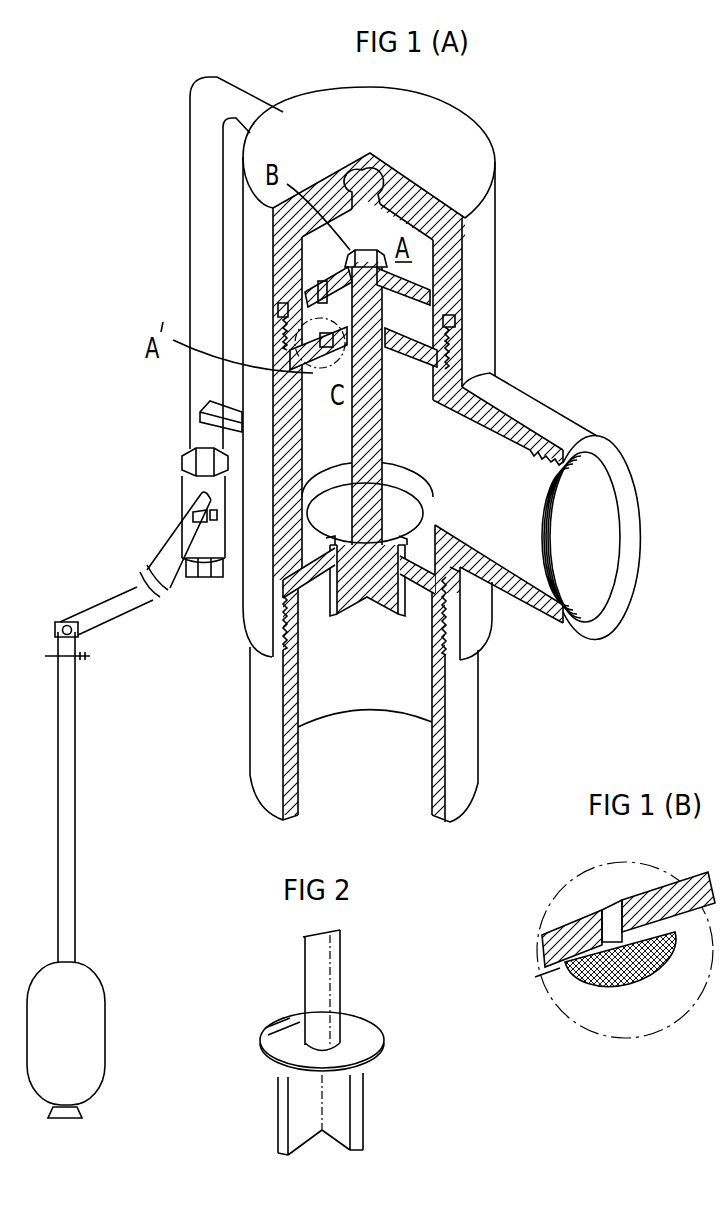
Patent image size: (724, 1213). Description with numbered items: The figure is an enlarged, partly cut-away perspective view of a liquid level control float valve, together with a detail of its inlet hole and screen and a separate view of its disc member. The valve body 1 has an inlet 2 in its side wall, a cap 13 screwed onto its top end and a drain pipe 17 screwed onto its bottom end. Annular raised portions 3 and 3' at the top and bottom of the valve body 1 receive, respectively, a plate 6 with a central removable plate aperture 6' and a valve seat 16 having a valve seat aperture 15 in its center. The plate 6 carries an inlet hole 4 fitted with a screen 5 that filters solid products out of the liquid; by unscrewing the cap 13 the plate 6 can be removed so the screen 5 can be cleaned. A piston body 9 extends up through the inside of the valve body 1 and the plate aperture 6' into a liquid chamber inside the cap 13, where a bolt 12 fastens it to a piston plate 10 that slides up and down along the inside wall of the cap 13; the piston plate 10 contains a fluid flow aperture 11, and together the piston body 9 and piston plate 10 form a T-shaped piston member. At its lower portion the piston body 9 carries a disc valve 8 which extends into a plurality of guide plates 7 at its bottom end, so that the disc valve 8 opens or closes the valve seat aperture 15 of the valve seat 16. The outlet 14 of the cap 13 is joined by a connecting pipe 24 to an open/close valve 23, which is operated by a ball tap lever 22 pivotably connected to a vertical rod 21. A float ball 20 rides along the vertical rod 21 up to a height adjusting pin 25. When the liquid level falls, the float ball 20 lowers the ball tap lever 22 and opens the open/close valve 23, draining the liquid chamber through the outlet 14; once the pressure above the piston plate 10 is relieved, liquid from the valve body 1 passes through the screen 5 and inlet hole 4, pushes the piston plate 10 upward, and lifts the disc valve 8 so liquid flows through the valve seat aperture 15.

In FIG. 1A, the valve body 1 is at (480, 335).
In FIG. 1A, the inlet 2 is at (600, 524).
In FIG. 1A, the annular raised portion 3 is at (416, 349).
In FIG. 1A, the annular raised portion 3' is at (489, 617).
In FIG. 1B, the inlet hole 4 is at (612, 925).
In FIG. 1B, the screen 5 is at (600, 983).
In FIG. 1A, the plate 6 is at (485, 307).
In FIG. 1B, the plate 6 is at (625, 977).
In FIG. 1A, the plate aperture 6' is at (472, 289).
In FIG. 1A, the guide plates 7 is at (343, 597).
In FIG. 2, the guide plates 7 is at (345, 1115).
In FIG. 1A, the disc valve 8 is at (417, 518).
In FIG. 2, the disc valve 8 is at (365, 1046).
In FIG. 1A, the piston body 9 is at (372, 408).
In FIG. 2, the piston body 9 is at (320, 985).
In FIG. 1A, the piston plate 10 is at (412, 298).
In FIG. 1A, the fluid flow aperture 11 is at (283, 300).
In FIG. 1A, the bolt 12 is at (330, 267).
In FIG. 1A, the cap 13 is at (298, 115).
In FIG. 1A, the outlet 14 is at (372, 172).
In FIG. 1A, the valve seat aperture 15 is at (400, 587).
In FIG. 1A, the valve seat 16 is at (402, 480).
In FIG. 1A, the drain pipe 17 is at (463, 726).
In FIG. 1A, the float ball 20 is at (80, 1015).
In FIG. 1A, the vertical rod 21 is at (77, 836).
In FIG. 1A, the ball tap lever 22 is at (120, 603).
In FIG. 1A, the open/close valve 23 is at (190, 502).
In FIG. 1A, the connecting pipe 24 is at (203, 203).
In FIG. 1A, the height adjusting pin 25 is at (85, 657).